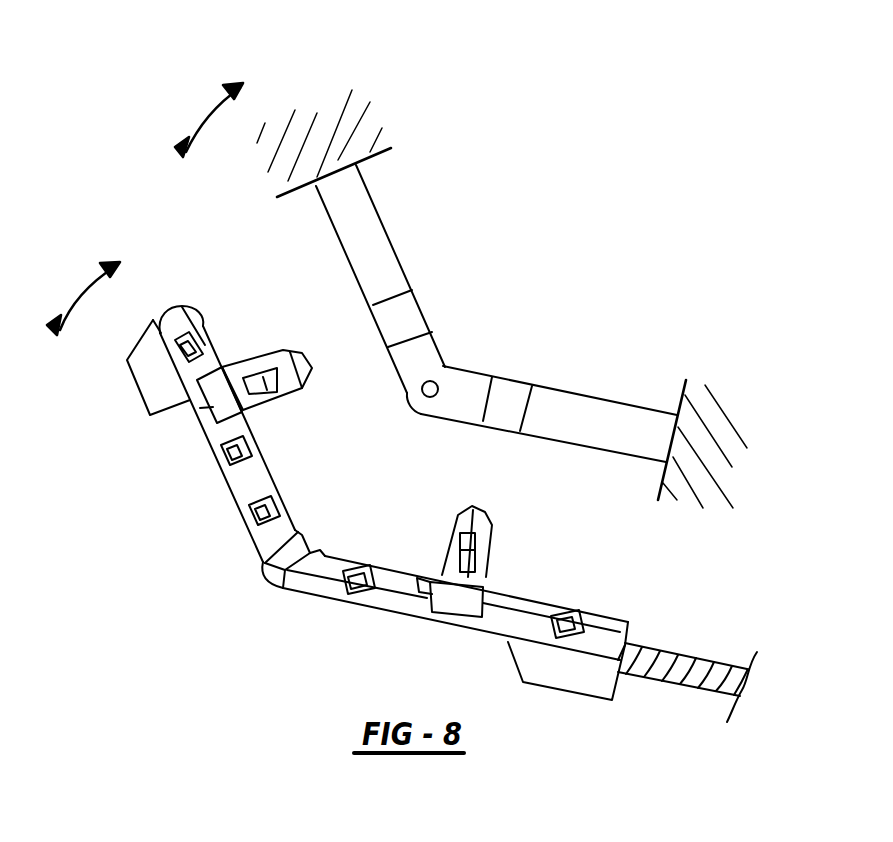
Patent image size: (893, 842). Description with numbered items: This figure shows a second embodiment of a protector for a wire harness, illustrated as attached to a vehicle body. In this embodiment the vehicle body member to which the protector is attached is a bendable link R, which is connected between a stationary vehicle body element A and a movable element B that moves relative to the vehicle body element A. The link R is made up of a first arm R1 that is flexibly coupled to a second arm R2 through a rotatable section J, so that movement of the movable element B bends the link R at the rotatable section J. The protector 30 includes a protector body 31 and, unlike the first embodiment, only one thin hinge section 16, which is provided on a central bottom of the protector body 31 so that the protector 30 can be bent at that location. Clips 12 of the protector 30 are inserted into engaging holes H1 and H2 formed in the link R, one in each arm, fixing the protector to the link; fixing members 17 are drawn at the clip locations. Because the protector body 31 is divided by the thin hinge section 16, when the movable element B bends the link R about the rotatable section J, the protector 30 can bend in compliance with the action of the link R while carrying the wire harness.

The stationary vehicle body element A is at (345, 135).
The movable element B is at (730, 407).
The first arm R1 is at (381, 218).
The second arm R2 is at (613, 415).
The engaging hole H1 is at (405, 312).
The engaging hole H2 is at (510, 397).
The rotatable section J is at (428, 381).
The bendable link R is at (464, 363).
The clip 12 is at (268, 357).
The thin hinge section 16 is at (272, 580).
The fixing member 17 is at (188, 412).
The protector 30 is at (559, 694).
The protector body 31 is at (230, 498).